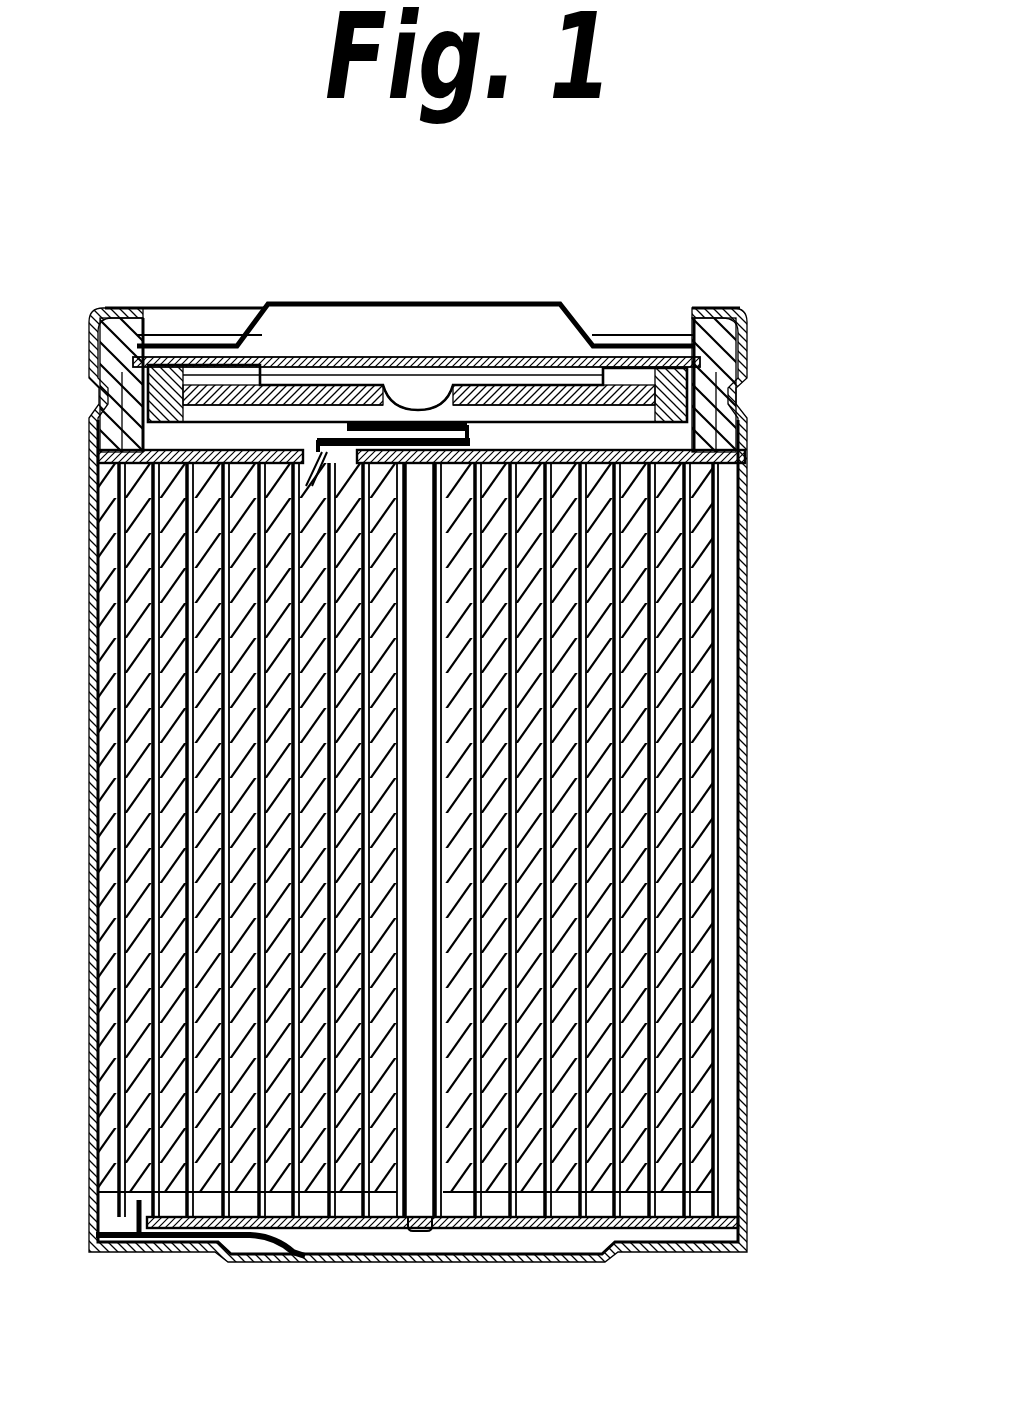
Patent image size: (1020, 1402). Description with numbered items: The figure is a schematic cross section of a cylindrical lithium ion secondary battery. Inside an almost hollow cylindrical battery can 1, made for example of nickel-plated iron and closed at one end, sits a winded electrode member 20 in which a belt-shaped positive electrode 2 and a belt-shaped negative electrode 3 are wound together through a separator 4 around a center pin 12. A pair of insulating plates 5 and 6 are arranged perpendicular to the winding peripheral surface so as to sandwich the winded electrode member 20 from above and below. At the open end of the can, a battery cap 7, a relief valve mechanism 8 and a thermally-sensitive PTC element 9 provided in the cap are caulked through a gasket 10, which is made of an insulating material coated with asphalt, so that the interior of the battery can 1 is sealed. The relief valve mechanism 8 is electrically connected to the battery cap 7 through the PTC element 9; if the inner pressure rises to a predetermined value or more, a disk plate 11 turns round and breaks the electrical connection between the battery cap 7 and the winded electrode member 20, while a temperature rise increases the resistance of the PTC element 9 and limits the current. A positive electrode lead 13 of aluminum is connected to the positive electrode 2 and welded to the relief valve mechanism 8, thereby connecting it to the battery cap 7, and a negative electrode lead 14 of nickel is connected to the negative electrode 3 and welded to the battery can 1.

The battery can 1 is at (748, 535).
The positive electrode 2 is at (665, 753).
The negative electrode 3 is at (705, 801).
The separator 4 is at (690, 849).
The insulating plate 5 is at (740, 459).
The insulating plate 6 is at (745, 1221).
The battery cap 7 is at (387, 300).
The relief valve mechanism 8 is at (541, 372).
The PTC element 9 is at (696, 355).
The gasket 10 is at (722, 420).
The disk plate 11 is at (493, 385).
The center pin 12 is at (420, 931).
The positive electrode lead 13 is at (370, 418).
The negative electrode lead 14 is at (270, 1258).
The winded electrode member 20 is at (485, 840).